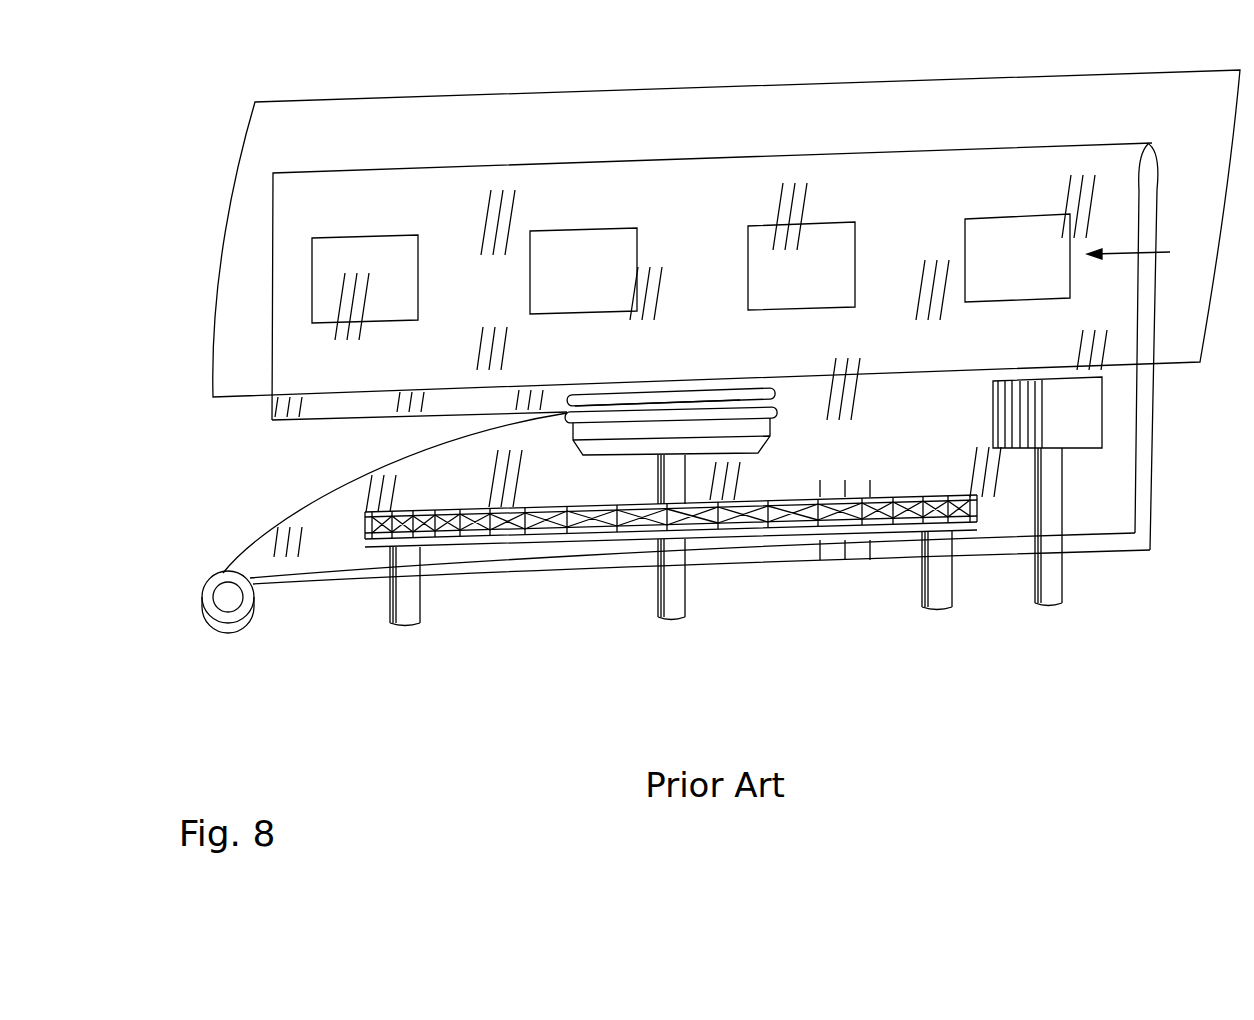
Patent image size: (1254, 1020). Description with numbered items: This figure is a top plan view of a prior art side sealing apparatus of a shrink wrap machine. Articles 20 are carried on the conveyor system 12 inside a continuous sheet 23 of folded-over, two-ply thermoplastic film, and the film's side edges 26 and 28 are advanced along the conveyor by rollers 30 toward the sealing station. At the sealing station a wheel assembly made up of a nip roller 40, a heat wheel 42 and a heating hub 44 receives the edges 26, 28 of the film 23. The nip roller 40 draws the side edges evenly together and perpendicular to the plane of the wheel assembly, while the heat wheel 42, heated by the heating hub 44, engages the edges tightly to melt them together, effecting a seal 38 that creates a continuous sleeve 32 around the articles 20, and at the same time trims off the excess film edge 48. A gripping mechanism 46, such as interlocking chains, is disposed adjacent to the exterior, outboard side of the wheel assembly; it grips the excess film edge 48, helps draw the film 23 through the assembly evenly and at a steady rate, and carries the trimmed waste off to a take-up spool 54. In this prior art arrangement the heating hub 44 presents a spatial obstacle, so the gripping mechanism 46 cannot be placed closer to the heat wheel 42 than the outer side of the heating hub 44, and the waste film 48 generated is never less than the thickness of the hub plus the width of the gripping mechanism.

The conveyor system 12 is at (957, 100).
The articles 20 is at (397, 247).
The continuous sheet of folded-over two-ply film 23 is at (1120, 153).
The upper film edge 26 is at (1115, 443).
The film edge 28 is at (1143, 498).
The rollers 30 is at (1072, 437).
The continuous sleeve 32 is at (250, 187).
The seal 38 is at (305, 420).
The nip roller 40 is at (683, 395).
The heat wheel 42 is at (777, 410).
The heating hub 44 is at (585, 448).
The gripping mechanism 46 is at (540, 527).
The excess film edge 48 is at (342, 537).
The take-up spool 54 is at (203, 612).